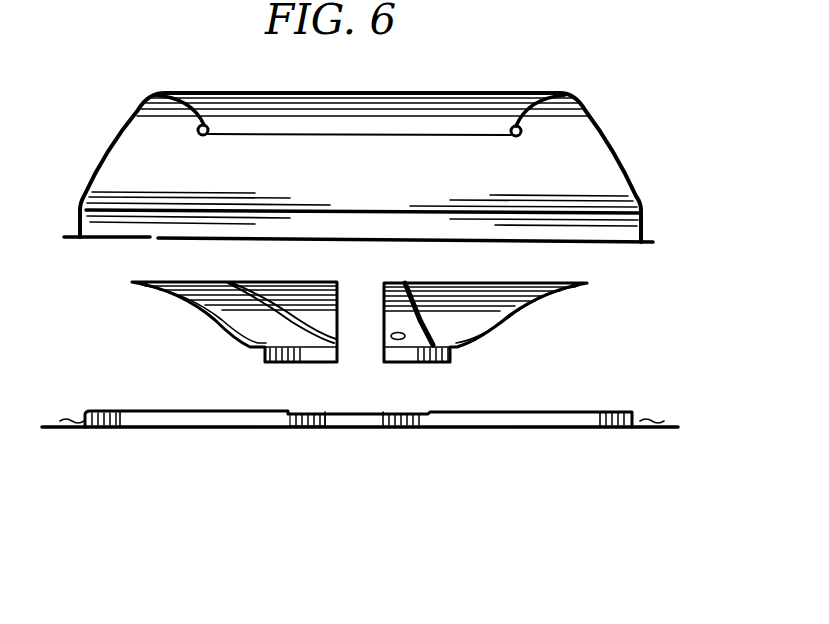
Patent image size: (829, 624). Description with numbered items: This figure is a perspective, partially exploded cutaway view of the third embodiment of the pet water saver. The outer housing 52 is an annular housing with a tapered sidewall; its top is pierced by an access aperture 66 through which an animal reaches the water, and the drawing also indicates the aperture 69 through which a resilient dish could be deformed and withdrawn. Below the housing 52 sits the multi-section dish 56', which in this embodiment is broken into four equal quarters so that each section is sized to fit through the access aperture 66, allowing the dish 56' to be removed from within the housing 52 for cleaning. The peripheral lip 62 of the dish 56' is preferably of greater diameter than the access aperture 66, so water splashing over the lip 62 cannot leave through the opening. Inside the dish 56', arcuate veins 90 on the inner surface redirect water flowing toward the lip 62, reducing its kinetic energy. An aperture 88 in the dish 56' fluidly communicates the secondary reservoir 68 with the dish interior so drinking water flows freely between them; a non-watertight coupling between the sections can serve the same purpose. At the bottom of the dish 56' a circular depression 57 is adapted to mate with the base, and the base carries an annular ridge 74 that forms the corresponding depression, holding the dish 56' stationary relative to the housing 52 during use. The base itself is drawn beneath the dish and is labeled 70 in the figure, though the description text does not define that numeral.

The annular housing 52 is at (582, 118).
The access aperture 66 is at (208, 124).
The aperture 69 is at (475, 115).
The secondary reservoir 68 is at (572, 191).
The multi-section dish 56' is at (311, 313).
The arcuate veins 90 is at (422, 312).
The peripheral lip 62 is at (587, 284).
The circular depression 57 is at (415, 356).
The aperture 88 is at (398, 340).
The base plate 70 is at (665, 429).
The annular ridge 74 is at (286, 416).